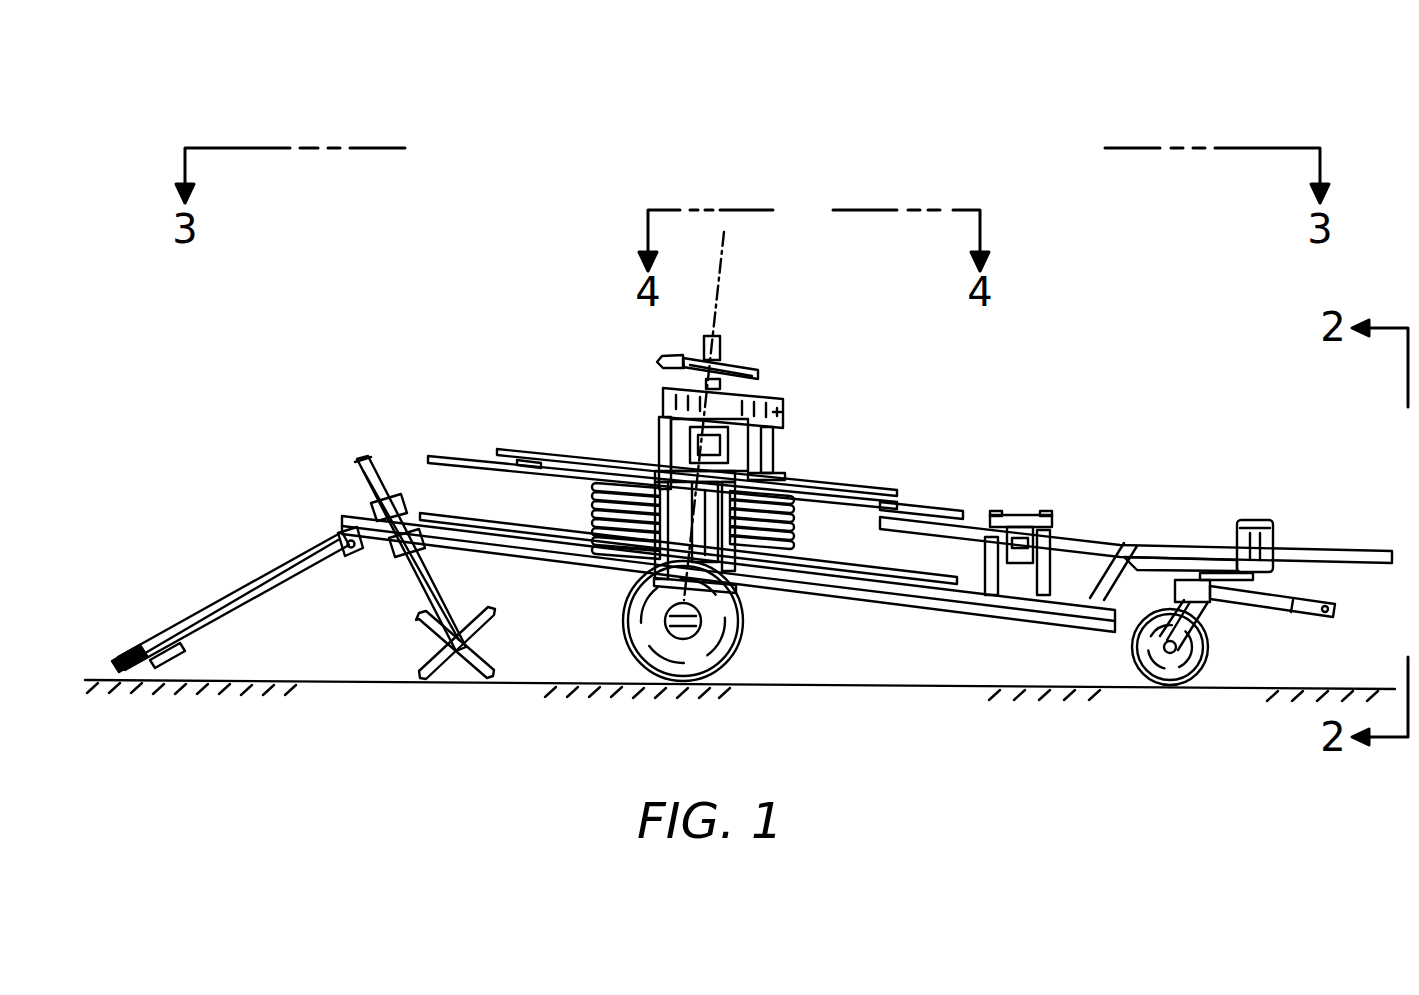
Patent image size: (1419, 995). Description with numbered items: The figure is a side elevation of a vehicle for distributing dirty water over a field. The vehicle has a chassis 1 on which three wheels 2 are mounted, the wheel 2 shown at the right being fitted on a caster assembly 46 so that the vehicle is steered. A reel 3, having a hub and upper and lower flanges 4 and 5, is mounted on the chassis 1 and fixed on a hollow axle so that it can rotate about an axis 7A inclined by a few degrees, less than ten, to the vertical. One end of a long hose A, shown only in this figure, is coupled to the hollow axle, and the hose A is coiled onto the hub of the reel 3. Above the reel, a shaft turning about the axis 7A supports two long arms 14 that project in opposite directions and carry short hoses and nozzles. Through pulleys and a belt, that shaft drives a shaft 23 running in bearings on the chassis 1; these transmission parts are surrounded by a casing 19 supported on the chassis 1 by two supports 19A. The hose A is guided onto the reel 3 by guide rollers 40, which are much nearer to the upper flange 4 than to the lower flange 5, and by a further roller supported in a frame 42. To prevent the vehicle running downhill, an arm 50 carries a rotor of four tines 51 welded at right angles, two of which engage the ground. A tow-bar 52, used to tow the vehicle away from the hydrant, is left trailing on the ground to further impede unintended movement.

The chassis 1 is at (893, 598).
The wheels 2 is at (750, 634).
The reel 3 is at (476, 446).
The upper flange 4 is at (447, 456).
The lower flange 5 is at (463, 512).
The hose A is at (591, 500).
The axis 7A is at (722, 262).
The arms 14 is at (745, 363).
The casing 19 is at (783, 418).
The supports 19A is at (667, 434).
The shaft 23 is at (778, 440).
The guide rollers 40 is at (1012, 520).
The frame 42 is at (1276, 527).
The caster assembly 46 is at (1223, 601).
The arm 50 is at (413, 590).
The tines 51 is at (478, 615).
The tow-bar 52 is at (218, 613).